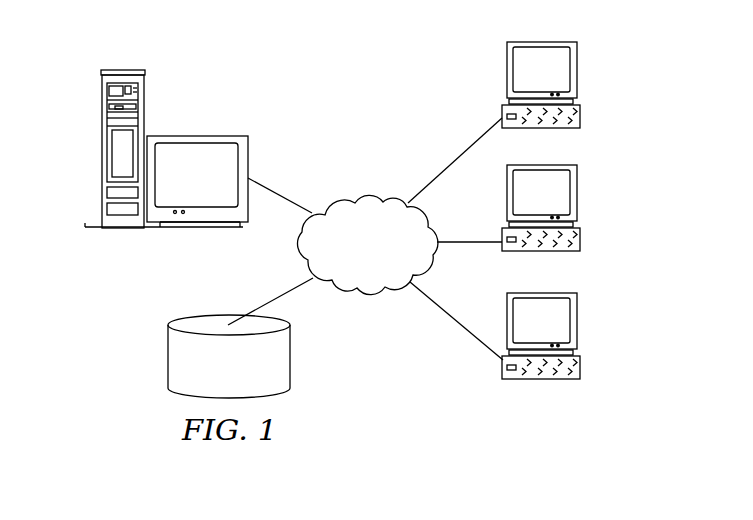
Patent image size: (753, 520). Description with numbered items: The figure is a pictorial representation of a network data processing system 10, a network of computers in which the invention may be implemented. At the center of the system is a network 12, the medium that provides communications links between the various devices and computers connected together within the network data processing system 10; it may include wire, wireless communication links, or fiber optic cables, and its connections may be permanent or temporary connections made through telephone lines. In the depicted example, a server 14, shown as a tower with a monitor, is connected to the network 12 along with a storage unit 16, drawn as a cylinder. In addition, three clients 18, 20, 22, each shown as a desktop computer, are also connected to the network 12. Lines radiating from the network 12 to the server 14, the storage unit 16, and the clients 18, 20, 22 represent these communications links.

The network data processing system 10 is at (249, 93).
The network 12 is at (377, 295).
The server 14 is at (102, 153).
The storage unit 16 is at (168, 357).
The client 18 is at (577, 70).
The client 20 is at (577, 195).
The client 22 is at (577, 323).